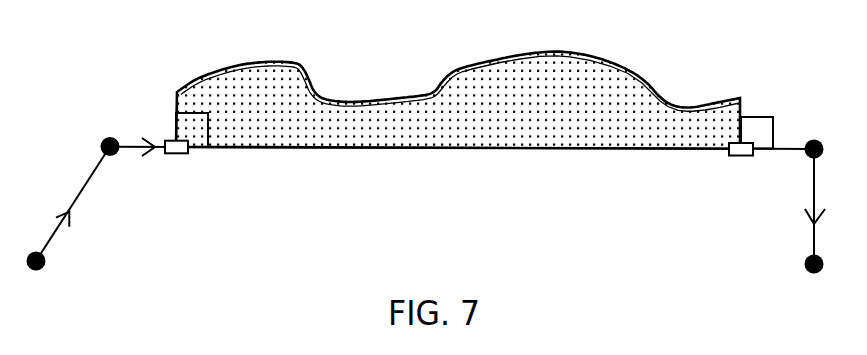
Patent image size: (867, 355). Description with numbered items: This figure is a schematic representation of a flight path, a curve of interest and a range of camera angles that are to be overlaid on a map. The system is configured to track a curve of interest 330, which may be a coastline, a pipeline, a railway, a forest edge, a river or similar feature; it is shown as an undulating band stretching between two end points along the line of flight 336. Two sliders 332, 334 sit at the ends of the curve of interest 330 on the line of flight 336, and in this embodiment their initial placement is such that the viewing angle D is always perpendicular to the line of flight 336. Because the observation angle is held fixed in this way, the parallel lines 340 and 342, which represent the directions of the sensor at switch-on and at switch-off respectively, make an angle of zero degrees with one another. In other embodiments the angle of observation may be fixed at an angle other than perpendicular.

The curve of interest 330 is at (605, 57).
The slider 332 is at (182, 154).
The slider 334 is at (745, 156).
The line of flight 336 is at (793, 148).
The parallel line 340 is at (175, 103).
The parallel line 342 is at (742, 110).